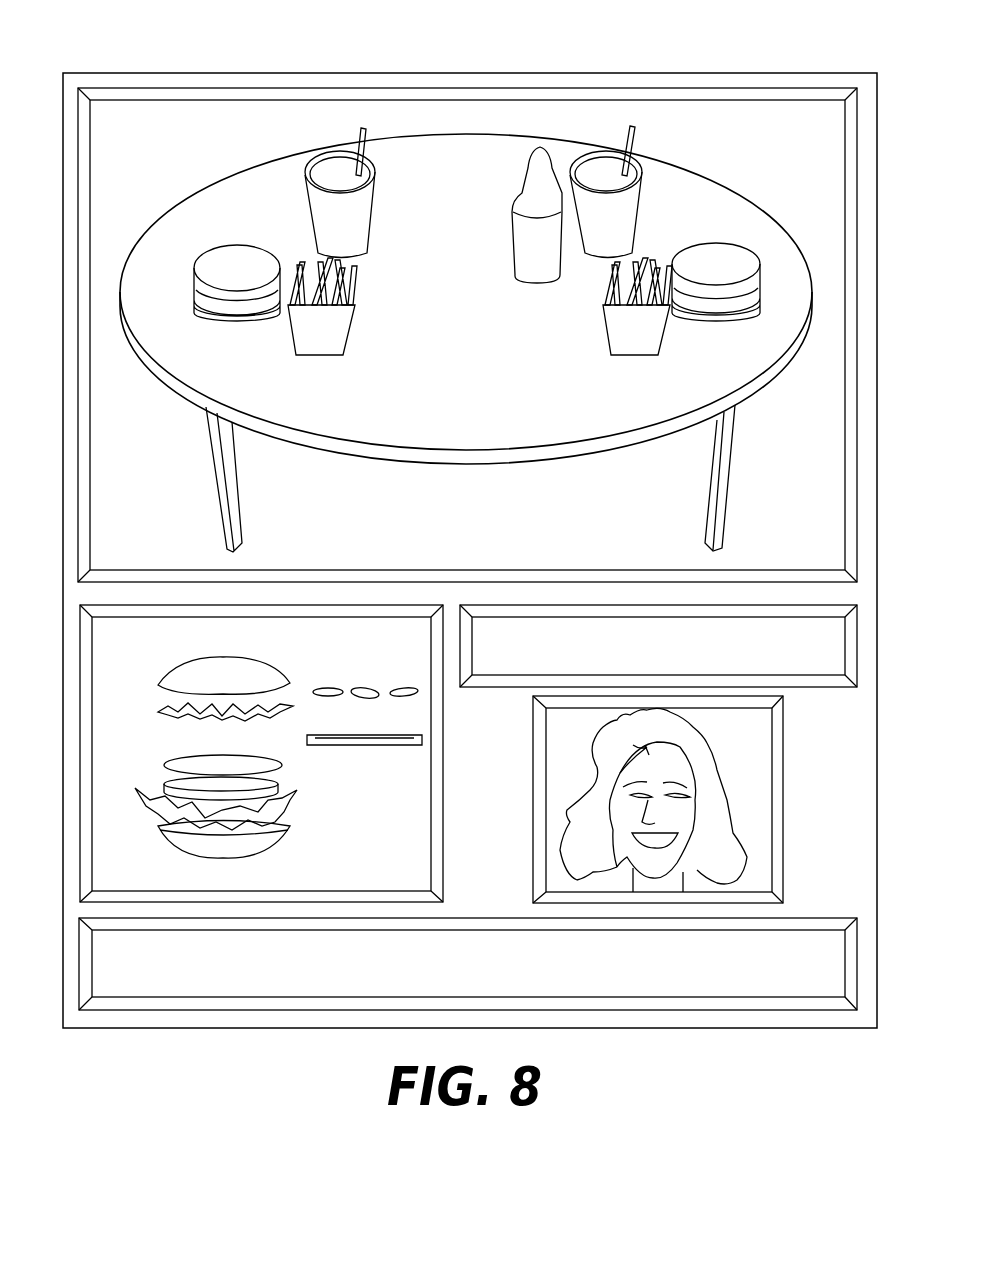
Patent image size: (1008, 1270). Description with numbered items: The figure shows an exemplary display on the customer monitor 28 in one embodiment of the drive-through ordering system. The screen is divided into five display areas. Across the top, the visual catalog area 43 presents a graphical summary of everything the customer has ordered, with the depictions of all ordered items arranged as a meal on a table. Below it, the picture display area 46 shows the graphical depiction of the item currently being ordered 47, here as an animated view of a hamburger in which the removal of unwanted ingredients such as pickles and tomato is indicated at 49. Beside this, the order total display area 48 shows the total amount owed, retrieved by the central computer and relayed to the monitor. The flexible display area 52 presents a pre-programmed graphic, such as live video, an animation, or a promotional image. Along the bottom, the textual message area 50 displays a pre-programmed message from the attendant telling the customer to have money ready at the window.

The customer monitor 28 is at (592, 52).
The visual catalog area 43 is at (260, 115).
The picture display area 46 is at (287, 753).
The graphical depiction of an ordered item 47 is at (268, 672).
The order total display area 48 is at (810, 660).
The removal of pickles and tomato 49 is at (313, 697).
The textual message area 50 is at (810, 945).
The flexible display area 52 is at (558, 757).